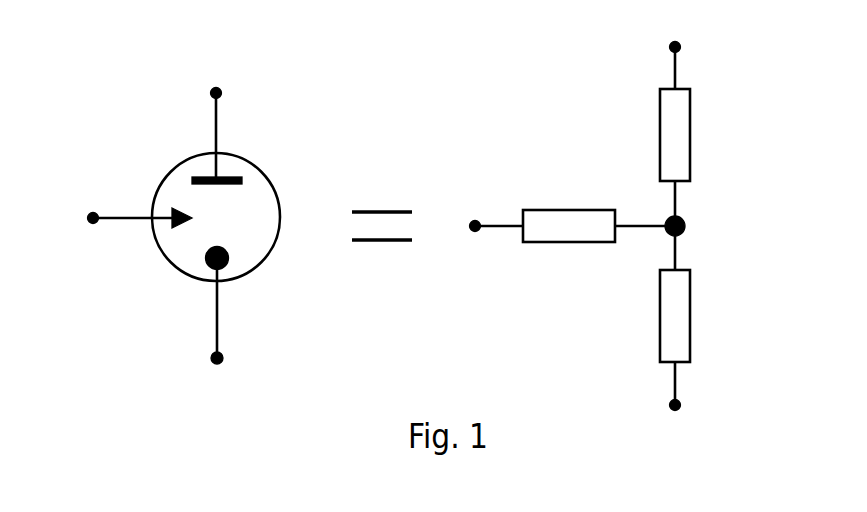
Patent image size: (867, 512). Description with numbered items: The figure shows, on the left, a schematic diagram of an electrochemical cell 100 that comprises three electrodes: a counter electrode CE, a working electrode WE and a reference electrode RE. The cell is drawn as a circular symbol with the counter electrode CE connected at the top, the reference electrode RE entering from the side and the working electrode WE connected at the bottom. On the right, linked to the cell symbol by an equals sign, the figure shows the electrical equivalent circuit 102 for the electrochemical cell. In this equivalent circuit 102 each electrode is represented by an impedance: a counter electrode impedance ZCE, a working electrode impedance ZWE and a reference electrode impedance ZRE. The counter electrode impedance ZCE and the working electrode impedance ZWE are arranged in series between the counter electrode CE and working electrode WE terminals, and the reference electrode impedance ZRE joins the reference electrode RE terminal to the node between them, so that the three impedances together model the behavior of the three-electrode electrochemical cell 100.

The electrochemical cell 100 is at (142, 109).
The equivalent circuit 102 is at (606, 129).
The counter electrode CE is at (229, 132).
The reference electrode RE is at (131, 202).
The working electrode WE is at (238, 311).
The counter electrode impedance ZCE is at (700, 135).
The reference electrode impedance ZRE is at (569, 208).
The working electrode impedance ZWE is at (702, 316).